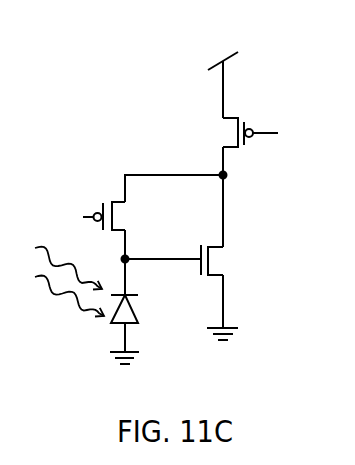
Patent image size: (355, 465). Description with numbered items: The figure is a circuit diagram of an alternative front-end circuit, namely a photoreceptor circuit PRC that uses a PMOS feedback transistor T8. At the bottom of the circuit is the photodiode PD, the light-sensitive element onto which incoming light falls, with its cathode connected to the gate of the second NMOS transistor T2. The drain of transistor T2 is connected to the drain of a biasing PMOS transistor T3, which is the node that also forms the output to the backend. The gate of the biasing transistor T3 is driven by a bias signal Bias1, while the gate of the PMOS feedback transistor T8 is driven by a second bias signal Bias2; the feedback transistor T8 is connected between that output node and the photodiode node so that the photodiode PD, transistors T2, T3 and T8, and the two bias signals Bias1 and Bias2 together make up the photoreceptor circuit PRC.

The photoreceptor circuit PRC is at (130, 100).
The biasing PMOS transistor T3 is at (237, 137).
The bias voltage Bias1 gate terminal Bias1 is at (294, 134).
The PMOS feedback transistor T8 is at (113, 222).
The bias voltage Bias2 gate terminal Bias2 is at (59, 218).
The second NMOS transistor T2 is at (210, 263).
The photodiode PD is at (138, 317).